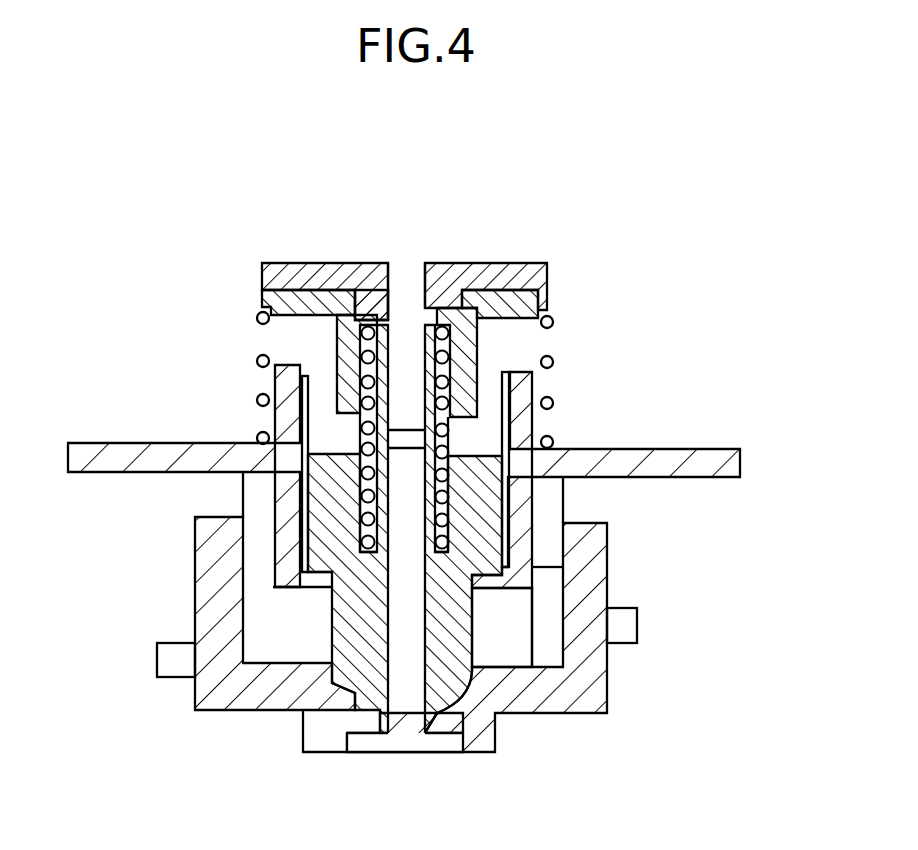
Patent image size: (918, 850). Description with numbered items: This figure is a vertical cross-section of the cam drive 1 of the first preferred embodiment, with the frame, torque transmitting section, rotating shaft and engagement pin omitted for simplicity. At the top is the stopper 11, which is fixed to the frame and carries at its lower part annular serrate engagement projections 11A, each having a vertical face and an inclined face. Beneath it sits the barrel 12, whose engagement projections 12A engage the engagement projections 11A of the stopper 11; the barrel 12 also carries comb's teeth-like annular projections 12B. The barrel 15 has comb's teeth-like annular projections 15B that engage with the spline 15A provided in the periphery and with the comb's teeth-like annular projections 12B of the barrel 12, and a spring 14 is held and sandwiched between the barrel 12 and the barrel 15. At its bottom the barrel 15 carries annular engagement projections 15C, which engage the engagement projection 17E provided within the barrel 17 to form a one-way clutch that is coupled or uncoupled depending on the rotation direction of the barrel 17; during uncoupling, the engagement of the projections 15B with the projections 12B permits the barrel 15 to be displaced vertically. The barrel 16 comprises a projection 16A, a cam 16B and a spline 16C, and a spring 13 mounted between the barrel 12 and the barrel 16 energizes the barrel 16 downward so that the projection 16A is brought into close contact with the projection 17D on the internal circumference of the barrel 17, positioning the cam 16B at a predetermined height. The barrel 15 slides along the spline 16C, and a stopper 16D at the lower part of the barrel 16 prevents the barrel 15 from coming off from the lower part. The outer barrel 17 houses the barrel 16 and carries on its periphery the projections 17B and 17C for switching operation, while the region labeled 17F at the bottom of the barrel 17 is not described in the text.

The cam drive 1 is at (228, 294).
The stopper 11 is at (552, 270).
The engagement projections 11A is at (359, 310).
The barrel 12 is at (552, 302).
The engagement projections 12A is at (348, 320).
The comb's teeth-like annular projections 12B is at (440, 430).
The spring 13 is at (556, 363).
The spring 14 is at (458, 357).
The barrel 15 is at (320, 545).
The spline 15A is at (504, 535).
The comb's teeth-like annular projections 15B is at (365, 480).
The engagement projections 15C is at (440, 678).
The barrel 16 is at (528, 430).
The projection 16A is at (553, 497).
The cam 16B is at (745, 462).
The spline 16C is at (252, 356).
The stopper 16D is at (327, 575).
The barrel 17 is at (598, 540).
The projection 17B is at (635, 622).
The projection 17C is at (172, 665).
The projection 17D is at (253, 617).
The engagement projection 17E is at (350, 725).
The housing bottom opening 17F is at (379, 756).